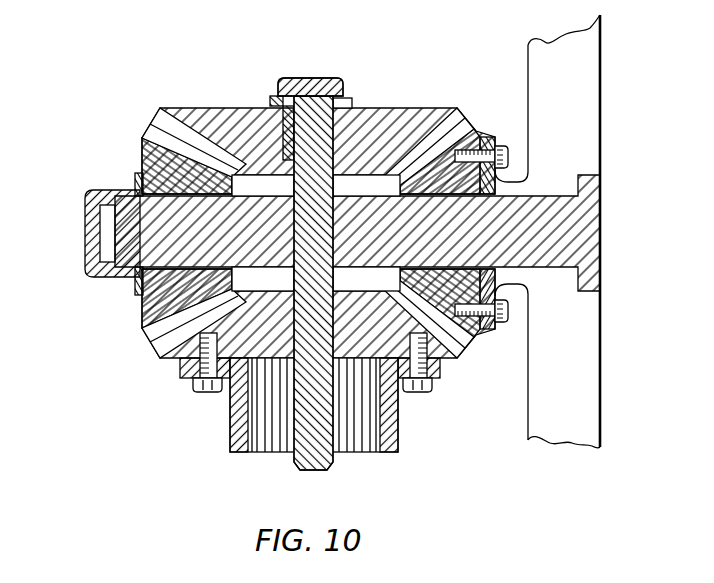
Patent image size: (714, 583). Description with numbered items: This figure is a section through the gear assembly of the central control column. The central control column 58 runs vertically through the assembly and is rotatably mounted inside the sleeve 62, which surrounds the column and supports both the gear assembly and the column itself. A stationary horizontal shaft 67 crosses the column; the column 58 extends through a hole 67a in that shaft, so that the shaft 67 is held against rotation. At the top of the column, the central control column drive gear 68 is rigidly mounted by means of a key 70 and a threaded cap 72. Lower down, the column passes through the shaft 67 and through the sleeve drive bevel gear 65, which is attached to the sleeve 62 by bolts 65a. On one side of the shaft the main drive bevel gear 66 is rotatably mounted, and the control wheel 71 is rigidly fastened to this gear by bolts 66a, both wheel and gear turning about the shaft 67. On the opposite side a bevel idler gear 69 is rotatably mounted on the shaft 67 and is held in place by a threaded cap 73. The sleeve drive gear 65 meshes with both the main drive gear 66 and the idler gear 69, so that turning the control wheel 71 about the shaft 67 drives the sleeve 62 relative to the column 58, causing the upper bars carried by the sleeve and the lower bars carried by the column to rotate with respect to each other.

The central control column 58 is at (315, 470).
The sleeve 62 is at (398, 437).
The sleeve drive bevel gear 65 is at (460, 335).
The bolts 65a is at (422, 388).
The main drive bevel gear 66 is at (472, 127).
The bolts 66a is at (508, 158).
The stationary horizontal shaft 67 is at (600, 234).
The hole 67a is at (344, 208).
The central control column drive gear 68 is at (400, 108).
The bevel idler gear 69 is at (152, 318).
The key 70 is at (282, 122).
The control wheel 71 is at (580, 111).
The threaded cap 72 is at (340, 88).
The threaded cap 73 is at (85, 264).